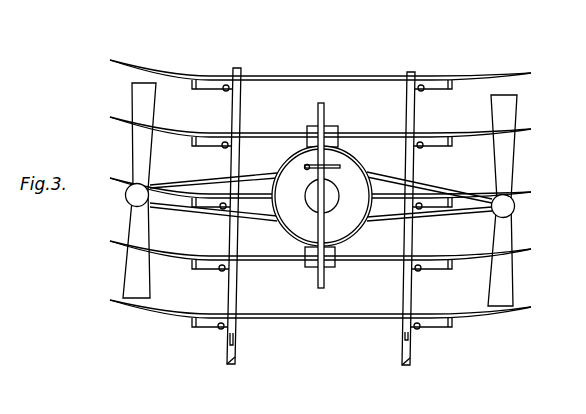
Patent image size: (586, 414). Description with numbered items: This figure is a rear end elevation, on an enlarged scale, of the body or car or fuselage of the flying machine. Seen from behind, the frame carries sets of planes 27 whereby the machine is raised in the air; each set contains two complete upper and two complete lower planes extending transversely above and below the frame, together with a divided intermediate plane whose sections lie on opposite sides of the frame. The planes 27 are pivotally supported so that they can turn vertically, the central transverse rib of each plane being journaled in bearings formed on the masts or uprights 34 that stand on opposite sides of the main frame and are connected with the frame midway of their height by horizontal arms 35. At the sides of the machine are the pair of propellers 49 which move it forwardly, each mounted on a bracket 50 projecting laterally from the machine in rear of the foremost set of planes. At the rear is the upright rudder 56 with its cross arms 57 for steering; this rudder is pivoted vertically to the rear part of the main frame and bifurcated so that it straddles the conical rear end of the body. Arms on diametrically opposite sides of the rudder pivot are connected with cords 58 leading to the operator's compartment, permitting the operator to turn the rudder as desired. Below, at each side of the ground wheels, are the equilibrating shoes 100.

The planes 27 is at (170, 76).
The masts or uprights 34 is at (241, 119).
The horizontal arms 35 is at (267, 183).
The propellers 49 is at (137, 158).
The brackets 50 is at (204, 175).
The upright rudder 56 is at (320, 285).
The cross arms 57 is at (333, 165).
The cords 58 is at (305, 167).
The equilibrating shoes 100 is at (230, 364).